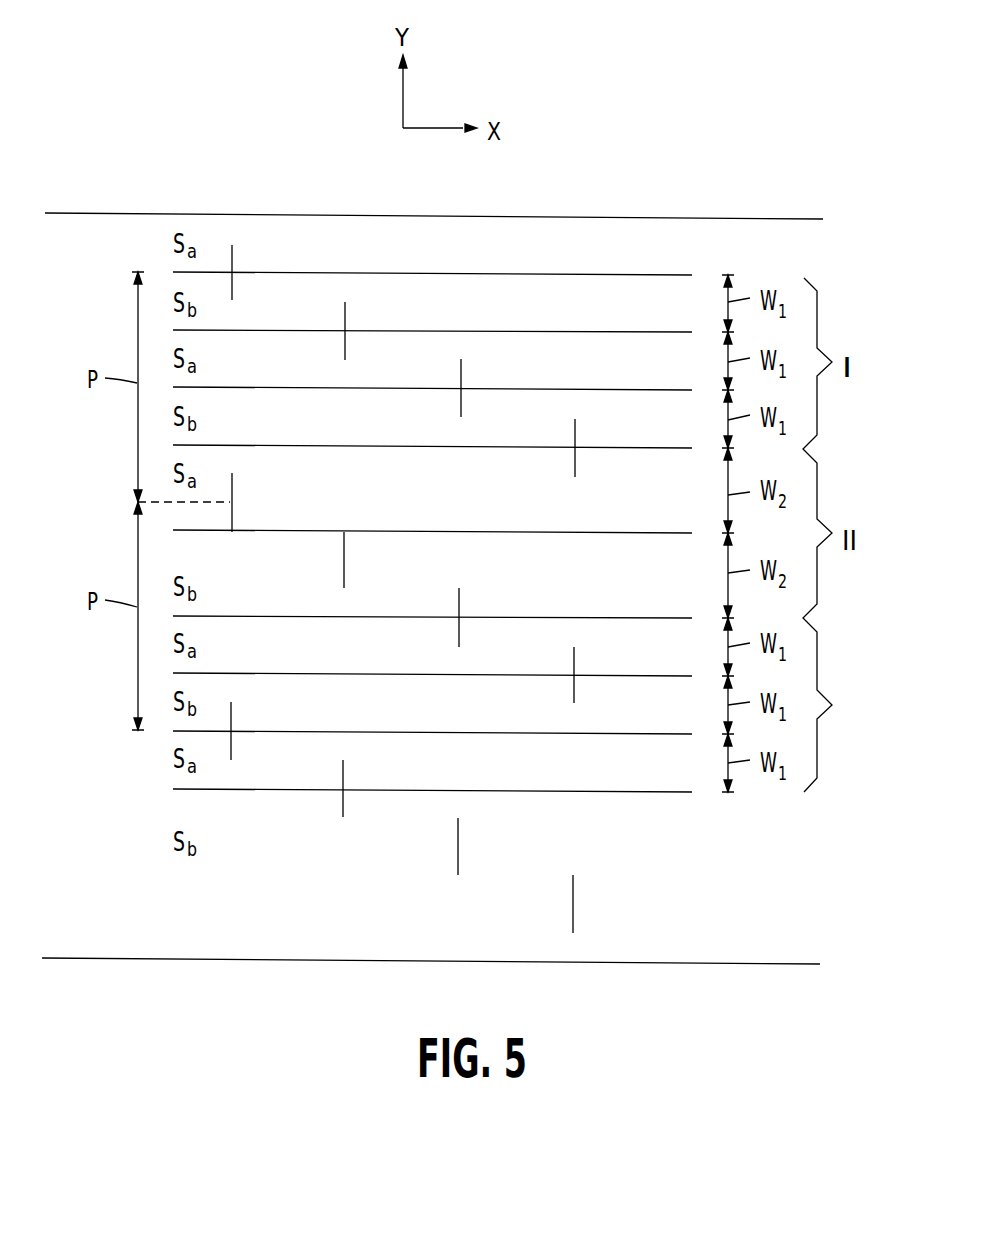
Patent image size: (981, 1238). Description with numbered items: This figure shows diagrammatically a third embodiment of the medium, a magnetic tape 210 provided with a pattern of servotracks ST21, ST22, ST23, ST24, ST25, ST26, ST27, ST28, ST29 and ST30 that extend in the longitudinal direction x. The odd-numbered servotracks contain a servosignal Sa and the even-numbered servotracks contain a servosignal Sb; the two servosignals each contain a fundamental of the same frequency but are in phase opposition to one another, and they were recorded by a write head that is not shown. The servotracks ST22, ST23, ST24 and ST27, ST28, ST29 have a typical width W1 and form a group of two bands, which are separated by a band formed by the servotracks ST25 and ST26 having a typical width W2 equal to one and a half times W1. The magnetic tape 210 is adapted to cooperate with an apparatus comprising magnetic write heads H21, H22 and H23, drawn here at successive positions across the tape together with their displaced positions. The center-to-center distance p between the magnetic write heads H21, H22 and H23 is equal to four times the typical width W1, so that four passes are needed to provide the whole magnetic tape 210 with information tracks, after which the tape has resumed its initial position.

The magnetic tape 210 is at (82, 213).
The servotrack ST21 is at (433, 252).
The servotrack ST22 is at (433, 310).
The servotrack ST23 is at (433, 368).
The servotrack ST24 is at (433, 426).
The servotrack ST25 is at (433, 498).
The servotrack ST26 is at (433, 598).
The servotrack ST27 is at (433, 652).
The servotrack ST28 is at (433, 711).
The servotrack ST29 is at (433, 770).
The servotrack ST30 is at (666, 849).
The magnetic write head H21 is at (573, 432).
The magnetic write head H22 is at (572, 657).
The magnetic write head H23 is at (636, 895).